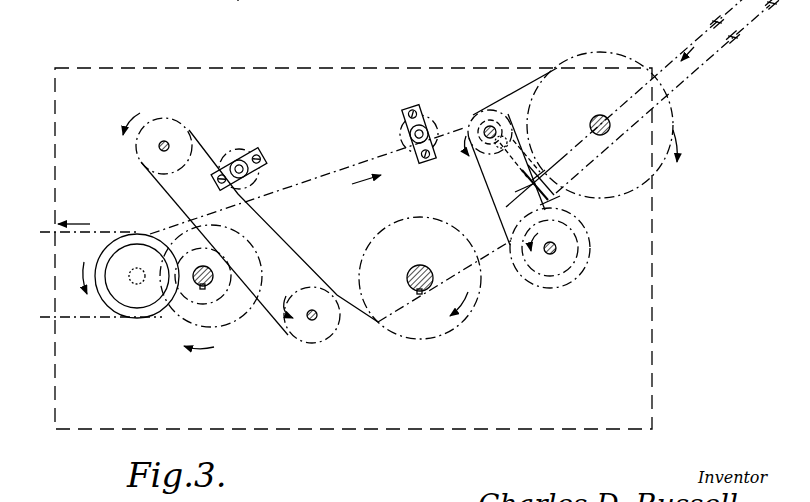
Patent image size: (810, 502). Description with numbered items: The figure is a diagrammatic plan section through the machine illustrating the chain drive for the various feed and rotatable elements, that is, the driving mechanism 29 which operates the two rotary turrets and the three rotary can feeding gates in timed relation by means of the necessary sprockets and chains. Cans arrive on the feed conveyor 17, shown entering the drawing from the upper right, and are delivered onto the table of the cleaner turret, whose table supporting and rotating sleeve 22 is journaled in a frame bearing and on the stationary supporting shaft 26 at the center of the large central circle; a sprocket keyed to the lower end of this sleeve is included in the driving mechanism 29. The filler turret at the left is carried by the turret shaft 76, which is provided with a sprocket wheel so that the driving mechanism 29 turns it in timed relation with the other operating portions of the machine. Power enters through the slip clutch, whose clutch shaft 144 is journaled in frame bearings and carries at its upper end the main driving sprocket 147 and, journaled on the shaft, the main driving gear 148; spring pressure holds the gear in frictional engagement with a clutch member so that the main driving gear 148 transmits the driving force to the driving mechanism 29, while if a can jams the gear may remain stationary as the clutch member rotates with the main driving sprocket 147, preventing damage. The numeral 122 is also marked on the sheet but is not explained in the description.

The feed conveyor 17 is at (699, 87).
The table supporting and rotating sleeve 22 is at (410, 272).
The stationary supporting shaft 26 is at (430, 272).
The driving mechanism 29 is at (514, 330).
The turret shaft 76 is at (208, 288).
The frame member 122 is at (236, 5).
The clutch shaft 144 is at (133, 285).
The main driving sprocket 147 is at (147, 236).
The main driving gear 148 is at (140, 318).